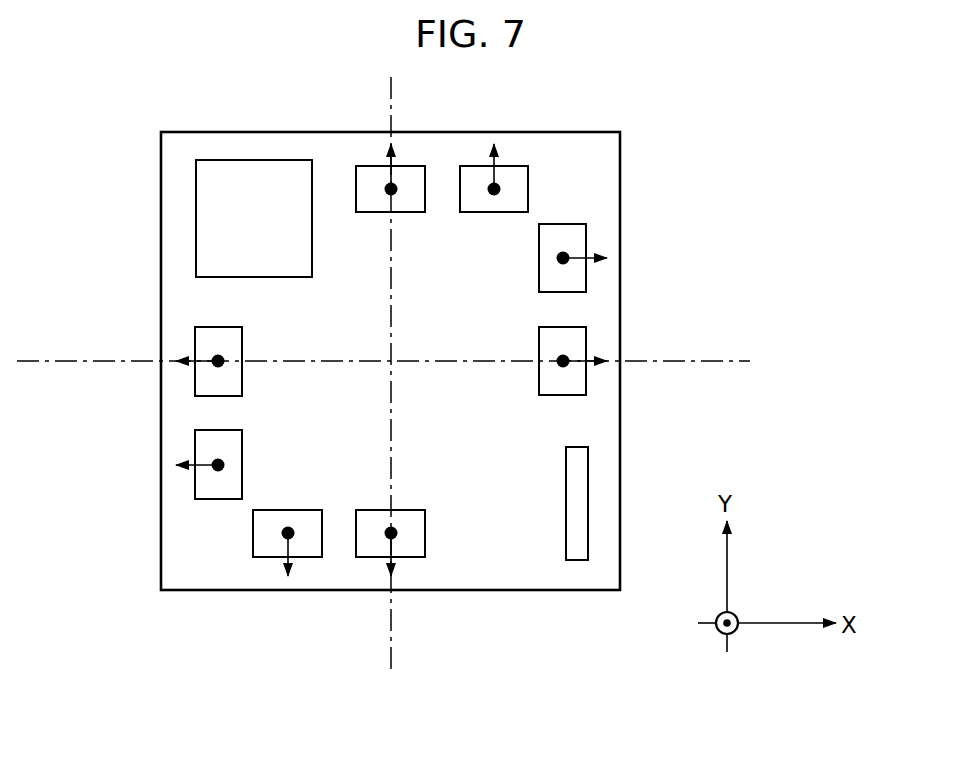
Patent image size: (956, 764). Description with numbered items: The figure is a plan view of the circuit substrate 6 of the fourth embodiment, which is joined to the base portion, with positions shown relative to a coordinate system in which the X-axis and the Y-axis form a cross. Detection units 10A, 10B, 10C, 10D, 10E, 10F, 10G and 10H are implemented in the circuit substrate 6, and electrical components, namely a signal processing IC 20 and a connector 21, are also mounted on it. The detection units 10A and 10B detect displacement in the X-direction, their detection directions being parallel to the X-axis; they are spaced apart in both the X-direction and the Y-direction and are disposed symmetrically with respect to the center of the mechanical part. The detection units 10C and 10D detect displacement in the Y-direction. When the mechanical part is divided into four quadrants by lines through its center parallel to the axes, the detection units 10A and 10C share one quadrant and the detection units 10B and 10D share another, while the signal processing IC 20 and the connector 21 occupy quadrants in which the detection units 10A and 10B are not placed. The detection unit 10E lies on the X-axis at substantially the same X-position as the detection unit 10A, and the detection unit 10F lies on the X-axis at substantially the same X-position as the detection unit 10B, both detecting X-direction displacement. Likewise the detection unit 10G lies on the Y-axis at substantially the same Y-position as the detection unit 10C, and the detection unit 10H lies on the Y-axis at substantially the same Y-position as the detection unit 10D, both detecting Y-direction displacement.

The circuit substrate 6 is at (580, 132).
The signal processing IC 20 is at (218, 160).
The connector 21 is at (588, 485).
The detection unit 10A is at (586, 234).
The detection unit 10B is at (195, 443).
The detection unit 10C is at (476, 166).
The detection unit 10D is at (263, 557).
The detection unit 10E is at (586, 383).
The detection unit 10F is at (195, 340).
The detection unit 10G is at (366, 166).
The detection unit 10H is at (413, 557).